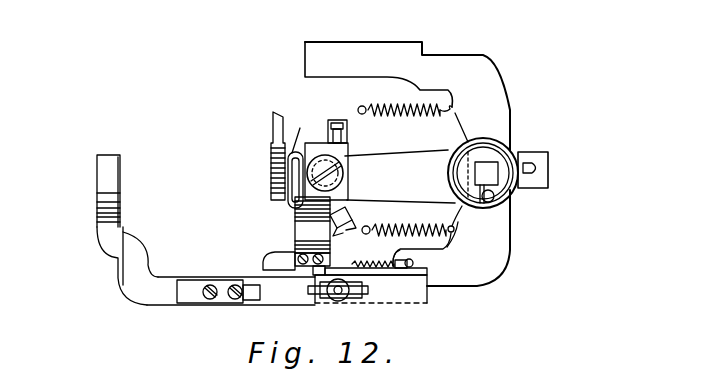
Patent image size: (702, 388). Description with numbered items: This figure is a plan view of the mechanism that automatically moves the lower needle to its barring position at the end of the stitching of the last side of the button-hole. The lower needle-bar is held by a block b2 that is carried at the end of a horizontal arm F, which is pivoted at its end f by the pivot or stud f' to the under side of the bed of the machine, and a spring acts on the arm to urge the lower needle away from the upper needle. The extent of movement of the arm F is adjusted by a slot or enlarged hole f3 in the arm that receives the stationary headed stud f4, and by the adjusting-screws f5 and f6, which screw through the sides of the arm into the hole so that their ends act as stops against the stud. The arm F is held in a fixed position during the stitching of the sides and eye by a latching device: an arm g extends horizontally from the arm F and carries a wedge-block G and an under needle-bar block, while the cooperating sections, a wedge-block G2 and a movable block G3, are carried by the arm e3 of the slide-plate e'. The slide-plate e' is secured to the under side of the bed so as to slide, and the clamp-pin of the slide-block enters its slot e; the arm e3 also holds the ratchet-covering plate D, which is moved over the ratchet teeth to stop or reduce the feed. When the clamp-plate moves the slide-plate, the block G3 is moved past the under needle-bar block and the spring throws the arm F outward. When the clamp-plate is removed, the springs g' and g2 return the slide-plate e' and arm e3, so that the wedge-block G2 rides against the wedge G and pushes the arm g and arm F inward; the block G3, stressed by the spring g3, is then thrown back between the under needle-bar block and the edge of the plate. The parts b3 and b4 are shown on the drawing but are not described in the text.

The ratchet-covering plate D is at (92, 215).
The slot e is at (547, 170).
The slide-plate e' is at (465, 239).
The arm e3 is at (157, 297).
The horizontal arm F is at (400, 176).
The end of arm f is at (295, 231).
The pivot stud f' is at (498, 166).
The slot or enlarged hole f3 is at (328, 190).
The stationary headed stud f4 is at (345, 165).
The adjusting-screw f5 is at (349, 133).
The adjusting-screw f6 is at (348, 220).
The arm g is at (268, 261).
The spring g' is at (405, 121).
The spring g2 is at (408, 221).
The spring g3 is at (396, 263).
The wedge-block G is at (320, 273).
The wedge-block G2 is at (311, 277).
The movable block G3 is at (400, 272).
The block b2 is at (288, 204).
The striped bar b3 is at (267, 156).
The bar pin b4 is at (301, 132).